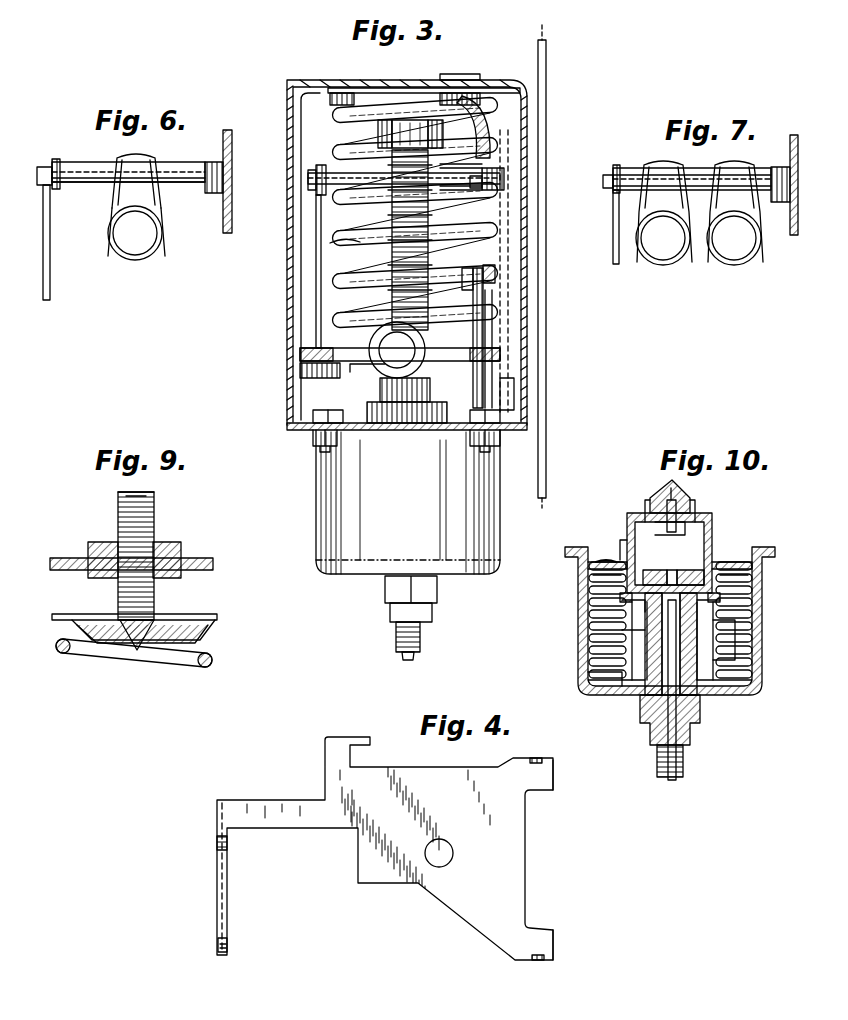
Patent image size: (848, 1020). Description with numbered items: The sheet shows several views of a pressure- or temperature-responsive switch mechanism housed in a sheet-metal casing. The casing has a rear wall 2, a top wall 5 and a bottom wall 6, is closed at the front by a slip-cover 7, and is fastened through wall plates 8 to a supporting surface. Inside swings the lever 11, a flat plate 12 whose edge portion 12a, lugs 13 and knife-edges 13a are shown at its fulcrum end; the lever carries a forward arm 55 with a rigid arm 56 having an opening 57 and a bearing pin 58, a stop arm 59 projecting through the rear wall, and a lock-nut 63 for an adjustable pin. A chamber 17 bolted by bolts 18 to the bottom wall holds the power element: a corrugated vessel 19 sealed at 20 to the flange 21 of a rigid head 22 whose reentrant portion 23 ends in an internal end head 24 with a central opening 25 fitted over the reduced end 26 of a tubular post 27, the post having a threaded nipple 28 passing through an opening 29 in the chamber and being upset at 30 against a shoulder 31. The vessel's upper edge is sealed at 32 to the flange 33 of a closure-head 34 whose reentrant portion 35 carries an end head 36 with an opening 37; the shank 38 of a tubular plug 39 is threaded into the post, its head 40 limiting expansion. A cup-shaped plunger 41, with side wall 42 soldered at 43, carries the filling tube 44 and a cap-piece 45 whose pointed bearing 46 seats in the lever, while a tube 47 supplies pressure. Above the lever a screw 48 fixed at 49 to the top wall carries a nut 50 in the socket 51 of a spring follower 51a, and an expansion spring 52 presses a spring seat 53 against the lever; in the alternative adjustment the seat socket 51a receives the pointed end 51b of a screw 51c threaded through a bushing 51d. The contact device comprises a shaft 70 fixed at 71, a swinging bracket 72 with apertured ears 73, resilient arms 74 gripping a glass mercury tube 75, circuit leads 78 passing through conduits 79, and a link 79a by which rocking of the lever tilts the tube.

In FIG. 3, the rear wall 2 is at (526, 220).
In FIG. 6, the rear wall 2 is at (228, 130).
In FIG. 3, the top wall 5 is at (360, 88).
In FIG. 9, the top wall 5 is at (210, 562).
In FIG. 3, the bottom wall 6 is at (362, 430).
In FIG. 3, the slip-cover 7 is at (289, 316).
In FIG. 3, the wall plates 8 is at (562, 460).
In FIG. 3, the lever 11 is at (358, 372).
In FIG. 4, the lever 11 is at (465, 897).
In FIG. 4, the flat plate 12 is at (402, 883).
In FIG. 4, the bracket arm edge 12a is at (356, 878).
In FIG. 4, the lugs 13 is at (550, 940).
In FIG. 4, the knife-edges 13a is at (535, 963).
In FIG. 3, the chamber 17 is at (488, 345).
In FIG. 10, the chamber 17 is at (610, 692).
In FIG. 3, the bolts 18 is at (502, 418).
In FIG. 10, the expansible-collapsible vessel 19 is at (760, 662).
In FIG. 10, the sealed lower edge portion 20 is at (592, 676).
In FIG. 10, the flange 21 is at (592, 688).
In FIG. 10, the rigid head 22 is at (635, 690).
In FIG. 10, the reentrant cylindrical portion 23 is at (748, 685).
In FIG. 10, the internal end head 24 is at (748, 632).
In FIG. 10, the central opening 25 is at (674, 570).
In FIG. 10, the reduced end 26 is at (630, 632).
In FIG. 10, the tubular rigid post 27 is at (720, 682).
In FIG. 10, the threaded nipple 28 is at (648, 712).
In FIG. 10, the opening 29 is at (690, 735).
In FIG. 10, the upset portion 30 is at (720, 598).
In FIG. 10, the shoulder 31 is at (635, 612).
In FIG. 10, the sealed upper edge portion 32 is at (596, 562).
In FIG. 10, the circumferential flange 33 is at (593, 577).
In FIG. 10, the closure-head 34 is at (730, 560).
In FIG. 10, the reentrant cylindrical portion 35 is at (610, 592).
In FIG. 10, the end head 36 is at (640, 602).
In FIG. 10, the central opening 37 is at (703, 530).
In FIG. 10, the shank 38 is at (694, 698).
In FIG. 10, the tubular plug 39 is at (648, 568).
In FIG. 10, the head 40 is at (627, 545).
In FIG. 10, the plunger member 41 is at (700, 525).
In FIG. 10, the side wall 42 is at (718, 555).
In FIG. 10, the soldered joint 43 is at (748, 576).
In FIG. 10, the filling tube 44 is at (678, 505).
In FIG. 3, the cap-piece 45 is at (514, 390).
In FIG. 10, the cap-piece 45 is at (650, 508).
In FIG. 3, the pointed bearing 46 is at (416, 438).
In FIG. 10, the pointed bearing 46 is at (668, 490).
In FIG. 3, the tube 47 is at (406, 660).
In FIG. 10, the tube 47 is at (677, 776).
In FIG. 3, the screw 48 is at (383, 255).
In FIG. 3, the fixed end 49 is at (458, 74).
In FIG. 3, the nut 50 is at (378, 136).
In FIG. 3, the socket 51 is at (340, 93).
In FIG. 9, the socket 51 is at (215, 615).
In FIG. 9, the spring follower 51a is at (125, 642).
In FIG. 9, the pointed lower end 51b is at (150, 645).
In FIG. 9, the screw 51c is at (155, 520).
In FIG. 9, the bushing 51d is at (92, 578).
In FIG. 3, the expansion spring 52 is at (335, 240).
In FIG. 9, the expansion spring 52 is at (210, 662).
In FIG. 3, the spring seat 53 is at (320, 338).
In FIG. 4, the arm 55 is at (296, 825).
In FIG. 3, the rigid arm 56 is at (325, 378).
In FIG. 4, the rigid arm 56 is at (215, 832).
In FIG. 4, the opening 57 is at (215, 870).
In FIG. 4, the bearing pin 58 is at (218, 958).
In FIG. 4, the stop arm 59 is at (335, 760).
In FIG. 3, the lock-nut 63 is at (392, 368).
In FIG. 3, the shaft 70 is at (310, 166).
In FIG. 6, the shaft 70 is at (105, 190).
In FIG. 7, the shaft 70 is at (630, 180).
In FIG. 3, the fixed end 71 is at (492, 182).
In FIG. 6, the fixed end 71 is at (208, 163).
In FIG. 7, the fixed end 71 is at (782, 165).
In FIG. 3, the bracket element 72 is at (500, 176).
In FIG. 6, the bracket element 72 is at (70, 158).
In FIG. 7, the bracket element 72 is at (728, 158).
In FIG. 3, the apertured ears 73 is at (322, 186).
In FIG. 6, the apertured ears 73 is at (215, 190).
In FIG. 7, the apertured ears 73 is at (760, 205).
In FIG. 3, the resilient arms 74 is at (462, 244).
In FIG. 6, the resilient arms 74 is at (158, 235).
In FIG. 7, the resilient arms 74 is at (716, 215).
In FIG. 6, the glass tube 75 is at (135, 260).
In FIG. 7, the glass tube 75 is at (737, 265).
In FIG. 3, the circuit leads 78 is at (490, 125).
In FIG. 3, the conduits 79 is at (486, 378).
In FIG. 6, the conduits 79 is at (50, 290).
In FIG. 7, the conduits 79 is at (613, 255).
In FIG. 3, the link 79a is at (318, 282).